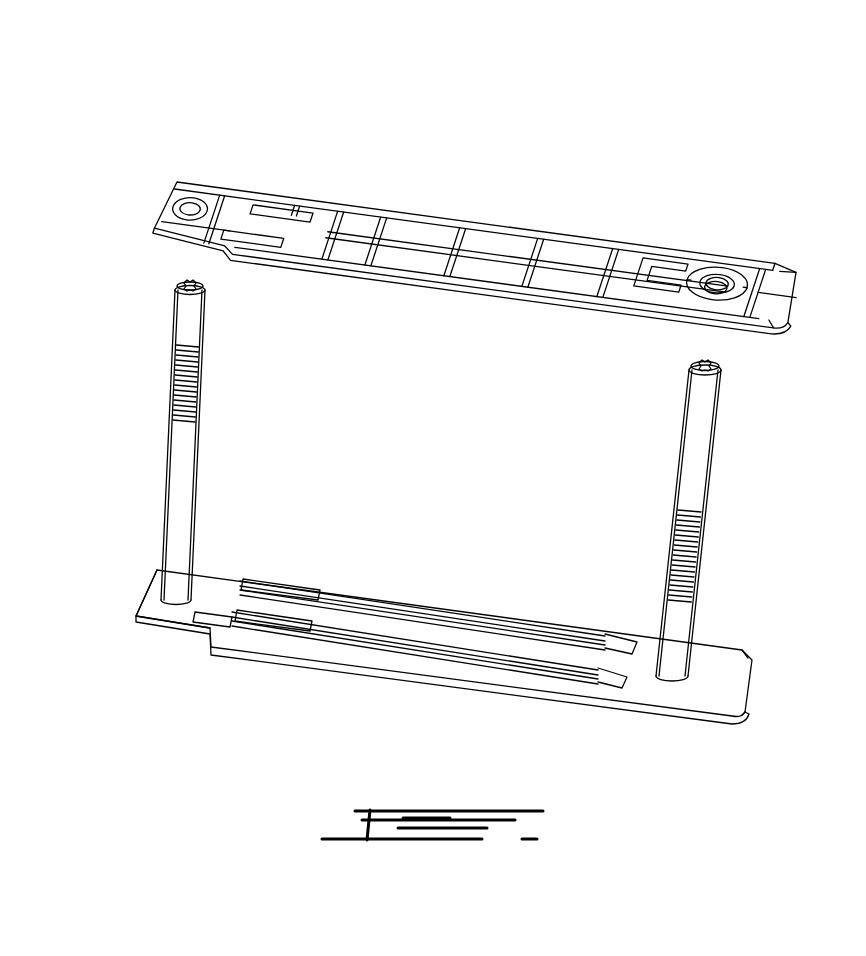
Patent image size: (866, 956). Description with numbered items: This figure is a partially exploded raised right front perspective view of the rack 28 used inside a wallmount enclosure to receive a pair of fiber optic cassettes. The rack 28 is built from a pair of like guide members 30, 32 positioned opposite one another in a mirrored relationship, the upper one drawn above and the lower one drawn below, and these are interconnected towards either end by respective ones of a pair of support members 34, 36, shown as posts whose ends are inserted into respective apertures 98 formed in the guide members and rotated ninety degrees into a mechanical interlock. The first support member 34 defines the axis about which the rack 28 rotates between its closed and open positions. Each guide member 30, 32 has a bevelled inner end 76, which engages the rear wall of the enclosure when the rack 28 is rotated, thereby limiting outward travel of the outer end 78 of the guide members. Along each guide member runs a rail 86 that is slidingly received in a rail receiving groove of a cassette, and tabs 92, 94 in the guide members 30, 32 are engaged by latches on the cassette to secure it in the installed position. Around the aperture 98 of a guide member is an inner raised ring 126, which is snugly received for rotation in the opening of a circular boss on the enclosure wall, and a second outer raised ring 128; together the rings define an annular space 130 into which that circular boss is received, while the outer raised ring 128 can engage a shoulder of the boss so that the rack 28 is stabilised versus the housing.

The rack 28 is at (514, 182).
The guide member 30 is at (418, 197).
The guide member 32 is at (447, 604).
The first support member 34 is at (690, 478).
The support member 36 is at (170, 480).
The bevelled inner end 76 is at (762, 262).
The outer end 78 is at (163, 230).
The rail 86 is at (503, 620).
The tab 92 is at (272, 237).
The tab 94 is at (277, 578).
The aperture 98 is at (706, 280).
The inner raised ring 126 is at (728, 296).
The outer raised ring 128 is at (718, 272).
The annular space 130 is at (690, 292).